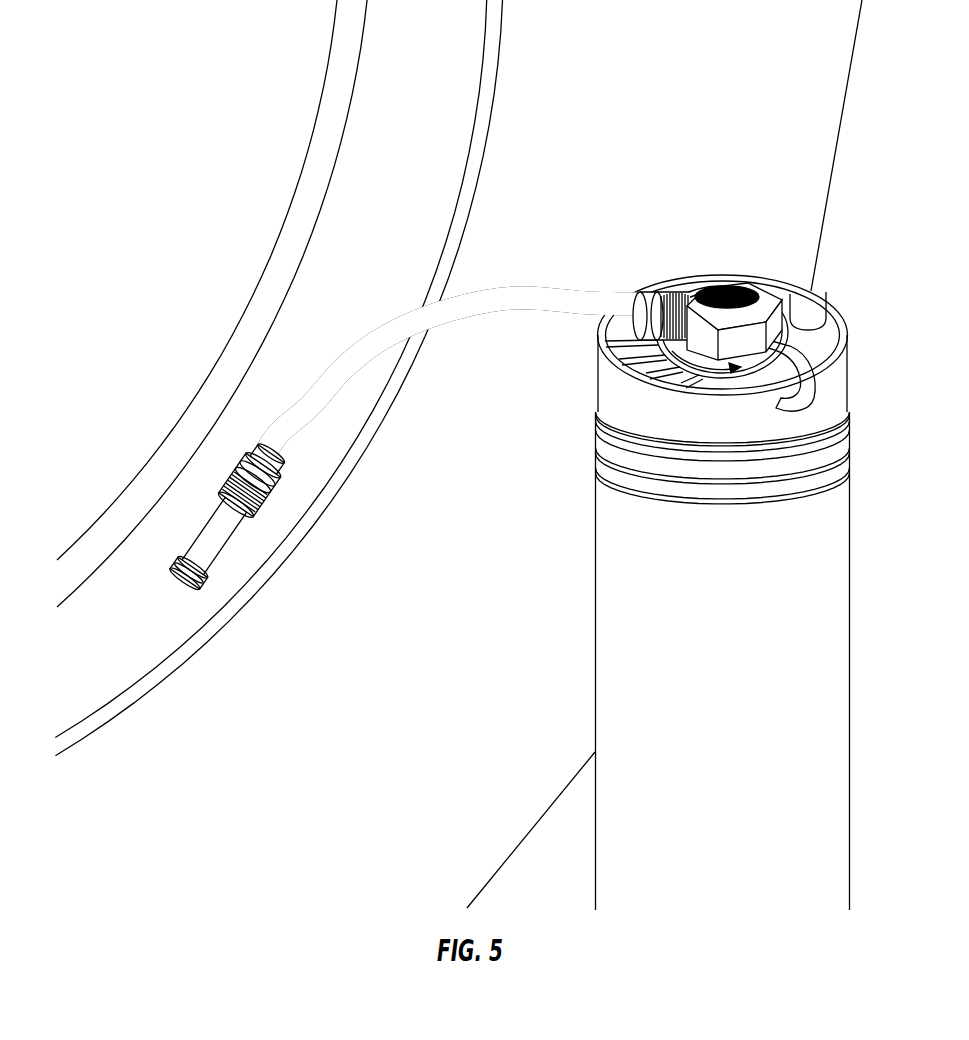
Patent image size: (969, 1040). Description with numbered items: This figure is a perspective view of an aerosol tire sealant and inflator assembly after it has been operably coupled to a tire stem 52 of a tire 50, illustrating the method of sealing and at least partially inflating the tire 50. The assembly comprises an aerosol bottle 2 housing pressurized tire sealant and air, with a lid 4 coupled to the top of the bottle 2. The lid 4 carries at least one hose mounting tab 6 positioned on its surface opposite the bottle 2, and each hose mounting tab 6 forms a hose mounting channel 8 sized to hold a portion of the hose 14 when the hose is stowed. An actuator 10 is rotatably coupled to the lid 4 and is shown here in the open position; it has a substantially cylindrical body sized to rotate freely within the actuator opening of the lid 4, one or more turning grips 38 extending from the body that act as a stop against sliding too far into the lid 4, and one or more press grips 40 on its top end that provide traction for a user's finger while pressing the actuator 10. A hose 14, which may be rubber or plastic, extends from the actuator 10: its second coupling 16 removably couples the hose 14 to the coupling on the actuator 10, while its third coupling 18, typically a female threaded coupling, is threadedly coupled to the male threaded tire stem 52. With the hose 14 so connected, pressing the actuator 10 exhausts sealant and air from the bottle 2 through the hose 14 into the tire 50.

The aerosol bottle 2 is at (843, 566).
The lid 4 is at (625, 383).
The hose mounting tab 6 is at (823, 343).
The hose mounting channel 8 is at (812, 320).
The actuator 10 is at (734, 335).
The hose 14 is at (494, 298).
The second coupling 16 is at (660, 296).
The third coupling 18 is at (260, 508).
The turning grip 38 is at (702, 337).
The press grip 40 is at (730, 278).
The tire 50 is at (638, 120).
The tire stem 52 is at (217, 538).